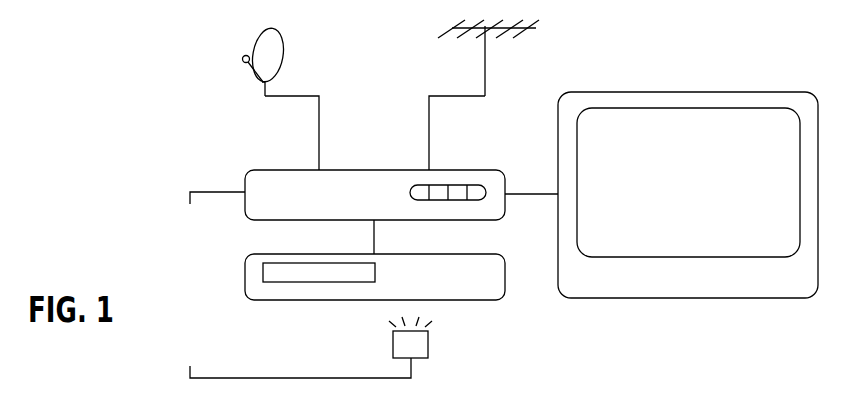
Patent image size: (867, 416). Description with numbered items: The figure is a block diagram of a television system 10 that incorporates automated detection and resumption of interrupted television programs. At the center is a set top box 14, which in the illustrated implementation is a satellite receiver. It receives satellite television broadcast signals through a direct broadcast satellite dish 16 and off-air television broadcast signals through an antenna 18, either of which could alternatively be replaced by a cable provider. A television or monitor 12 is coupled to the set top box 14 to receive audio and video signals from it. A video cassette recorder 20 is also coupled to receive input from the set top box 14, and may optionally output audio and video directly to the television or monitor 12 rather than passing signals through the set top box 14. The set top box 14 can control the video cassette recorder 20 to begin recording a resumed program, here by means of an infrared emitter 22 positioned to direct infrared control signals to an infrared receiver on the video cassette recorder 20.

The television system 10 is at (158, 121).
The television or monitor 12 is at (720, 92).
The set top box 14 is at (249, 169).
The direct broadcast satellite dish 16 is at (283, 66).
The antenna 18 is at (463, 35).
The video cassette recorder 20 is at (489, 302).
The infrared emitter 22 is at (428, 358).